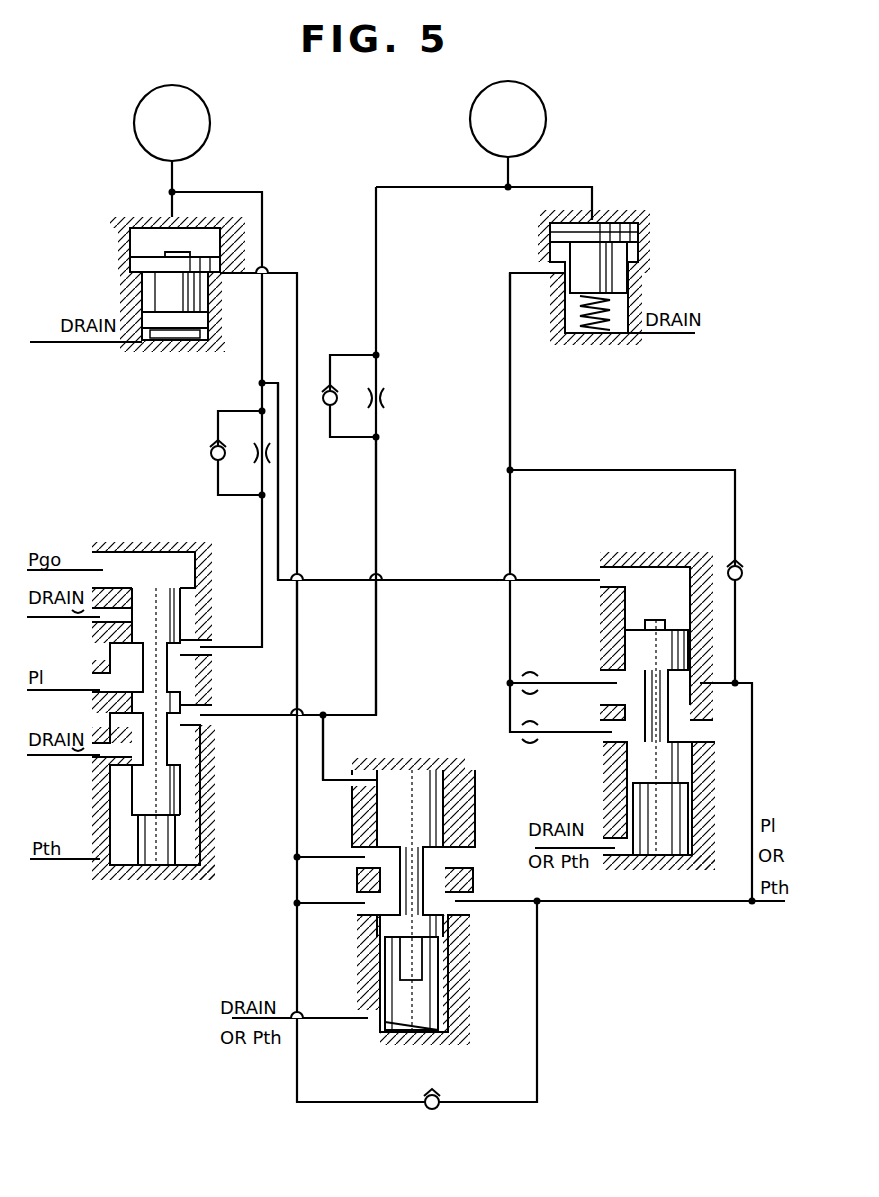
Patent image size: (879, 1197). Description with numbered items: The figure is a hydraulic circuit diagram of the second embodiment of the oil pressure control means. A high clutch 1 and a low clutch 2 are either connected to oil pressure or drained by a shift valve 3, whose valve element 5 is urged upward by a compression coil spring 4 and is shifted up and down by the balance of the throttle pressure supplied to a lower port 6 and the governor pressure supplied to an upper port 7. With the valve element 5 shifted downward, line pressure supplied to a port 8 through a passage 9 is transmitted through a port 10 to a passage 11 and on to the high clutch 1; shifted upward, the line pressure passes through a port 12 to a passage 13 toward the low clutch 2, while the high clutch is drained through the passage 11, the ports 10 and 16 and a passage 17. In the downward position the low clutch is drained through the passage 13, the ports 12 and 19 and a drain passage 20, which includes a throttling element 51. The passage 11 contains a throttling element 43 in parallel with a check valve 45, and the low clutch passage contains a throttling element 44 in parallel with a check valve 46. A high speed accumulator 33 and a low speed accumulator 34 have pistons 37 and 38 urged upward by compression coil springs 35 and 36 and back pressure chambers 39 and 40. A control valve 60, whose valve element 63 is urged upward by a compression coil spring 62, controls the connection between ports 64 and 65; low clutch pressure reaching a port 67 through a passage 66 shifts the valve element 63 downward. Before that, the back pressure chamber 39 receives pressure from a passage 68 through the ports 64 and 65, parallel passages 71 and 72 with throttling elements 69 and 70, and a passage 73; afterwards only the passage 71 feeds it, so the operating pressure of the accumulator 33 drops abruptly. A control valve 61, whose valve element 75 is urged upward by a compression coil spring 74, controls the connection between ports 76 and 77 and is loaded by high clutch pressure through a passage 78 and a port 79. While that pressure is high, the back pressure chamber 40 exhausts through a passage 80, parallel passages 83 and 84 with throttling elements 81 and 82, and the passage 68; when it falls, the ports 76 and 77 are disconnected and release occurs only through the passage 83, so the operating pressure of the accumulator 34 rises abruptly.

The high clutch 1 is at (190, 158).
The low clutch 2 is at (530, 150).
The shift valve 3 is at (172, 540).
The compression coil spring 4 is at (135, 862).
The valve element 5 is at (180, 792).
The lower port 6 is at (95, 872).
The upper port 7 is at (100, 562).
The port 8 is at (100, 680).
The passage 9 is at (45, 691).
The port 10 is at (212, 655).
The passage 11 is at (274, 552).
The port 12 is at (210, 725).
The passage 13 is at (378, 606).
The port 16 is at (92, 622).
The passage 17 is at (38, 618).
The drain port 19 is at (92, 760).
The drain passage 20 is at (40, 757).
The high speed accumulator 33 is at (158, 215).
The low speed accumulator 34 is at (612, 218).
The compression coil spring 35 is at (168, 335).
The compression coil spring 36 is at (608, 330).
The piston 37 is at (162, 256).
The piston 38 is at (562, 220).
The back pressure chamber 39 is at (208, 294).
The back pressure chamber 40 is at (560, 252).
The throttling element 43 is at (254, 454).
The throttling element 44 is at (384, 398).
The check valve 45 is at (210, 448).
The check valve 46 is at (336, 404).
The throttling element 51 is at (100, 732).
The control valve 60 is at (416, 756).
The control valve 61 is at (652, 550).
The compression coil spring 62 is at (388, 1026).
The valve element 63 is at (448, 940).
The port 64 is at (470, 908).
The port 65 is at (352, 850).
The passage 66 is at (326, 738).
The port 67 is at (355, 786).
The passage 68 is at (750, 905).
The throttling element 69 is at (312, 898).
The throttling element 70 is at (312, 850).
The passage 71 is at (330, 912).
The passage 72 is at (354, 880).
The passage 73 is at (300, 660).
The compression coil spring 74 is at (636, 852).
The valve element 75 is at (690, 770).
The port 76 is at (617, 682).
The port 77 is at (606, 724).
The passage 78 is at (444, 576).
The port 79 is at (600, 572).
The passage 80 is at (512, 406).
The throttling element 81 is at (528, 682).
The throttling element 82 is at (530, 742).
The passage 83 is at (562, 680).
The passage 84 is at (580, 735).